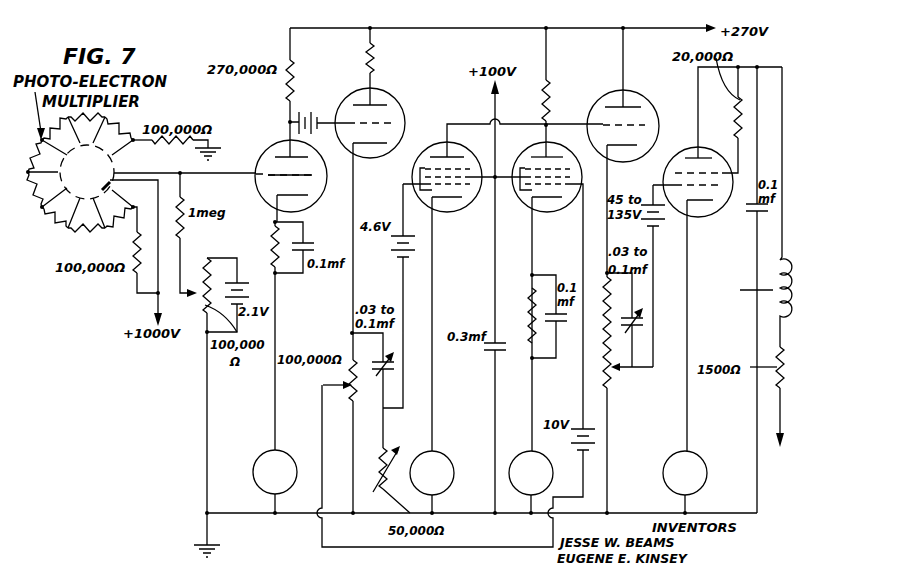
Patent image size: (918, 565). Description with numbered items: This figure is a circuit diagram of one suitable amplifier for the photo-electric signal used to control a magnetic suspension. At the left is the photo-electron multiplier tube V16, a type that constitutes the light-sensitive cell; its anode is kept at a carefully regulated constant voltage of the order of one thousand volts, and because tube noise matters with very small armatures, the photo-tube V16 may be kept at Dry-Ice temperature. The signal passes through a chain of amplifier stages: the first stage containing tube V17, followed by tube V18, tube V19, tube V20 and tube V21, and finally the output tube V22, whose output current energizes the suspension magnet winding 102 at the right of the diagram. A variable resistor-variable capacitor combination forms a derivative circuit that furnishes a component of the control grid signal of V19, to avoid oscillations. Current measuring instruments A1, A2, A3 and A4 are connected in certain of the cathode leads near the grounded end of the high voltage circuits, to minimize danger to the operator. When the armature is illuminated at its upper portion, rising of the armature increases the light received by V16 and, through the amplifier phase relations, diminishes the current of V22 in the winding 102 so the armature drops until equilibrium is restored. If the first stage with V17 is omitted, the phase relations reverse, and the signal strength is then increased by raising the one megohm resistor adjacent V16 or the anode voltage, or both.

The suspension magnet winding 102 is at (773, 260).
The photo-electron multiplier tube V16 is at (137, 192).
The first stage amplifier tube V17 is at (294, 180).
The amplifier tube V18 is at (366, 218).
The amplifier tube V19 is at (448, 290).
The amplifier tube V20 is at (541, 296).
The amplifier tube V21 is at (623, 177).
The output tube V22 is at (696, 290).
The current measuring instrument A1 is at (275, 481).
The current measuring instrument A2 is at (432, 482).
The current measuring instrument A3 is at (531, 482).
The current measuring instrument A4 is at (685, 482).